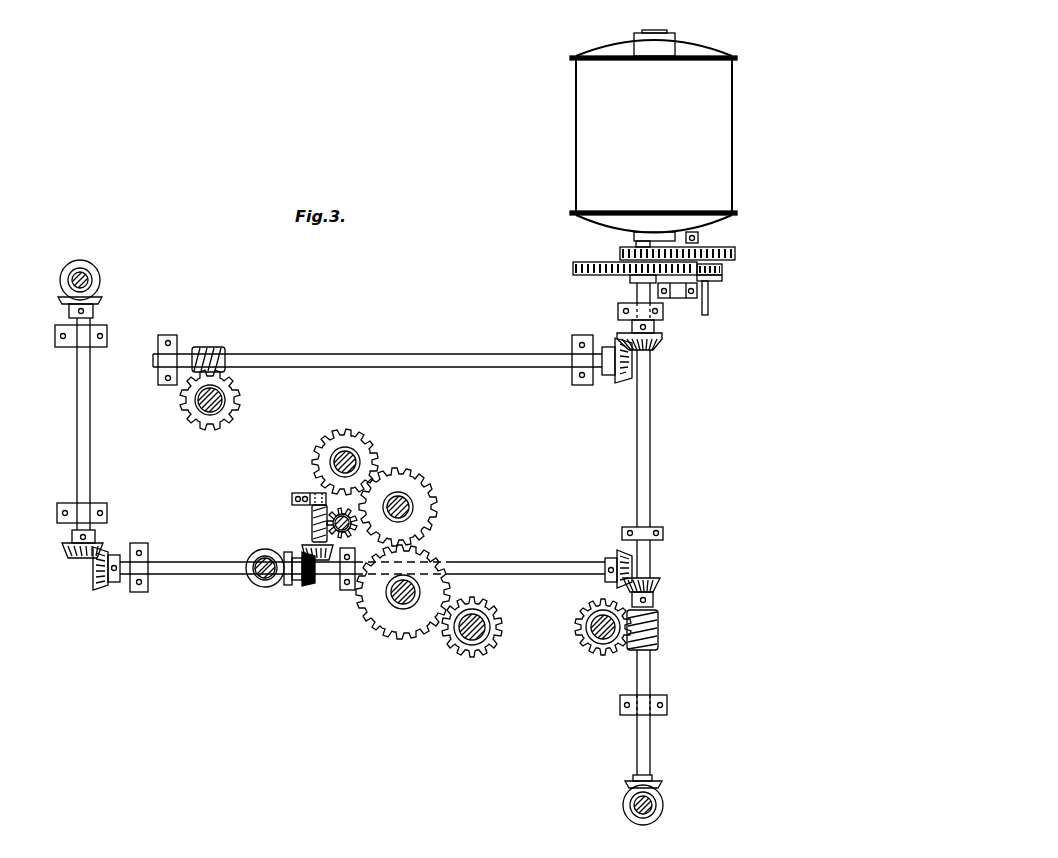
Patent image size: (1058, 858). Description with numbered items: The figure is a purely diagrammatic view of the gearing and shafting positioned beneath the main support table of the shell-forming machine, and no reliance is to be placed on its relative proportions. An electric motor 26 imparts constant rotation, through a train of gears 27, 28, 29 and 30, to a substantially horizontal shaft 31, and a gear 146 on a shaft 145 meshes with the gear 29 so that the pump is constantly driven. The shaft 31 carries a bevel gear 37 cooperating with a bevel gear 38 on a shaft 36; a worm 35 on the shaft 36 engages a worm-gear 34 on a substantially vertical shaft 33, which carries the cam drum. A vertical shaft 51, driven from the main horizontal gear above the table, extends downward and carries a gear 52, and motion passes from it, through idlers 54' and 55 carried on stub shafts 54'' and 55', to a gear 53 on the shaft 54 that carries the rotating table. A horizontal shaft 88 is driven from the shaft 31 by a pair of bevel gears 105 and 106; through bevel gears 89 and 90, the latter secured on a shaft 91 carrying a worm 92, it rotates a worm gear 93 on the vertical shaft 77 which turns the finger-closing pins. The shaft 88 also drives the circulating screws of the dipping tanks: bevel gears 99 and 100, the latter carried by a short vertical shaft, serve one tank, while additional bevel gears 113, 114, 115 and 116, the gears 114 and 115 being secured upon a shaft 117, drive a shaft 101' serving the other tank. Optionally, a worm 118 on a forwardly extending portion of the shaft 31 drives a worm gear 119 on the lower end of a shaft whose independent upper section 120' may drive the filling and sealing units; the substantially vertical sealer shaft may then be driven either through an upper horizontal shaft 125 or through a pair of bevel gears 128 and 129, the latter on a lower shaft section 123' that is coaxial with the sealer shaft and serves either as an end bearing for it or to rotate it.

The electric motor 26 is at (583, 134).
The gear 27 is at (622, 247).
The gear 28 is at (735, 254).
The gear 29 is at (722, 268).
The gear 30 is at (578, 273).
The gear 146 is at (720, 281).
The shaft 145 is at (708, 305).
The horizontal shaft 31 is at (651, 433).
The bevel gear 37 is at (662, 343).
The bevel gear 38 is at (624, 383).
The shaft 36 is at (394, 362).
The worm 35 is at (213, 349).
The worm-gear 34 is at (232, 418).
The vertical shaft 33 is at (223, 400).
The bevel gear 116 is at (67, 272).
The shaft 101' is at (117, 274).
The bevel gear 115 is at (68, 310).
The shaft 117 is at (84, 468).
The bevel gear 114 is at (67, 556).
The bevel gear 113 is at (96, 580).
The horizontal shaft 88 is at (510, 562).
The bevel gear 100 is at (259, 582).
The bevel gear 99 is at (289, 586).
The bevel gear 89 is at (300, 550).
The vertical shaft 77 is at (341, 560).
The worm 92 is at (294, 502).
The shaft 91 is at (315, 493).
The bevel gear 90 is at (313, 530).
The worm gear 93 is at (348, 535).
The gear 52 is at (363, 450).
The vertical shaft 51 is at (346, 455).
The idler 54' is at (419, 507).
The stub shaft 54'' is at (434, 507).
The idler 55 is at (421, 590).
The stub shaft 55' is at (384, 626).
The shaft 54 is at (464, 642).
The gear 53 is at (477, 655).
The bevel gear 106 is at (618, 557).
The bevel gear 105 is at (659, 578).
The worm 118 is at (658, 614).
The worm gear 119 is at (573, 630).
The upper shaft section 120' is at (590, 654).
The upper horizontal shaft 125 is at (652, 683).
The bevel gear 128 is at (663, 785).
The bevel gear 129 is at (656, 811).
The lower shaft section 123' is at (620, 822).